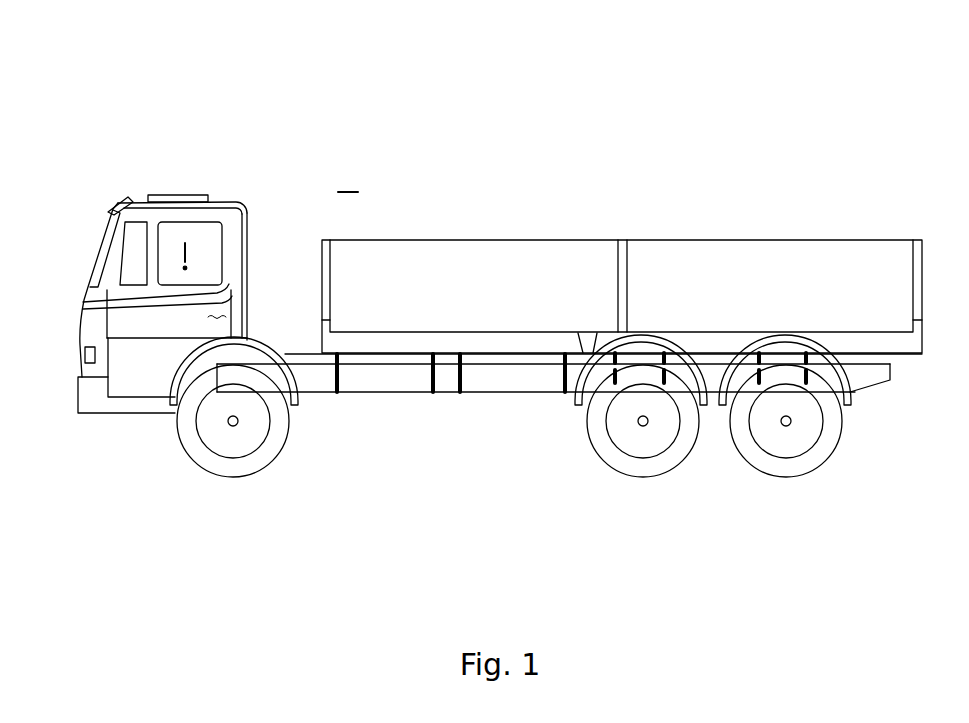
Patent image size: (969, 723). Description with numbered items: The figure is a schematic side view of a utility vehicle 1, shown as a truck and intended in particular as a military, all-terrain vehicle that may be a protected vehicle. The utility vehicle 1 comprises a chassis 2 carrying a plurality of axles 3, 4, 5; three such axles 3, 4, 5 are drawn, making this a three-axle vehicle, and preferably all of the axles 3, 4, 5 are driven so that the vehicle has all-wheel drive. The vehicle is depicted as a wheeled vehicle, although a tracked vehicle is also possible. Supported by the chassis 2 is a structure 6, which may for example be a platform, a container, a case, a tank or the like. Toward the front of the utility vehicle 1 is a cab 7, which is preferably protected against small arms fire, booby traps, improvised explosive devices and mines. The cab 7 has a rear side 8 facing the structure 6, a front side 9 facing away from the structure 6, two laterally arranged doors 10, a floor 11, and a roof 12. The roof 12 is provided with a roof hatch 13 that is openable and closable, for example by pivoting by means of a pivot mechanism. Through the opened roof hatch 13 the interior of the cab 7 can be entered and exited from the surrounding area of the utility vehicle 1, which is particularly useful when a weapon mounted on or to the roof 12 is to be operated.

The utility vehicle 1 is at (768, 162).
The chassis 2 is at (482, 403).
The axle 3 is at (235, 427).
The axle 4 is at (645, 427).
The axle 5 is at (787, 427).
The structure 6 is at (412, 252).
The cab 7 is at (90, 252).
The rear side 8 is at (248, 228).
The front side 9 is at (110, 213).
The door 10 is at (156, 375).
The floor 11 is at (108, 405).
The roof 12 is at (226, 203).
The roof hatch 13 is at (170, 195).